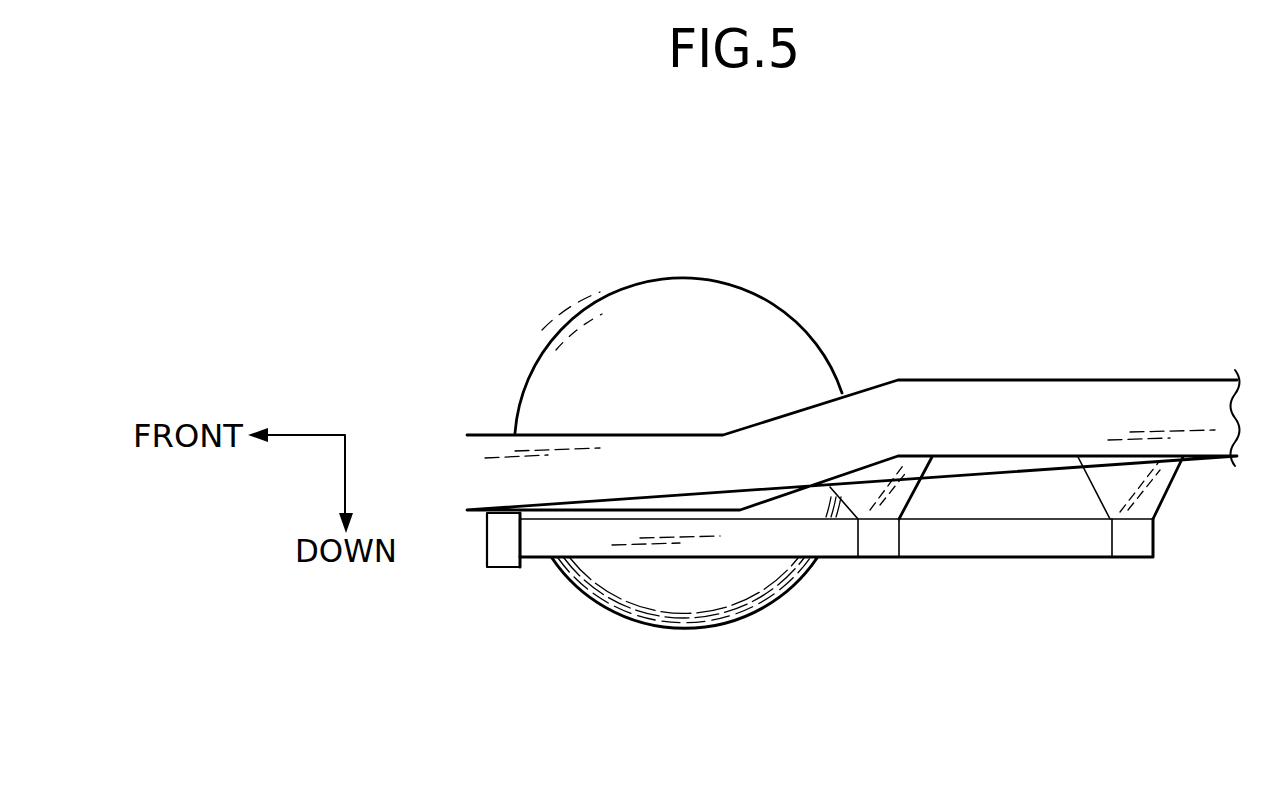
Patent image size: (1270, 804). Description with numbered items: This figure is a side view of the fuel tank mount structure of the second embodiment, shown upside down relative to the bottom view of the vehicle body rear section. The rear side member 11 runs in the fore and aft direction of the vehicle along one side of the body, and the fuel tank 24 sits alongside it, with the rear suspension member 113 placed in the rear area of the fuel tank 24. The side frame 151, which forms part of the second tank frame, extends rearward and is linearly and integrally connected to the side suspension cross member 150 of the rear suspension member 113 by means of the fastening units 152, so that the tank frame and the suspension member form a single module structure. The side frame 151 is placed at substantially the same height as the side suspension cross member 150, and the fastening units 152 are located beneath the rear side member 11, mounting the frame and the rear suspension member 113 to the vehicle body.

The fuel tank 24 is at (677, 266).
The rear side member 11 is at (912, 418).
The side suspension cross member 150 is at (998, 542).
The side frame 151 is at (762, 543).
The fastening unit 152 is at (880, 542).
The rear suspension member 113 is at (1037, 572).